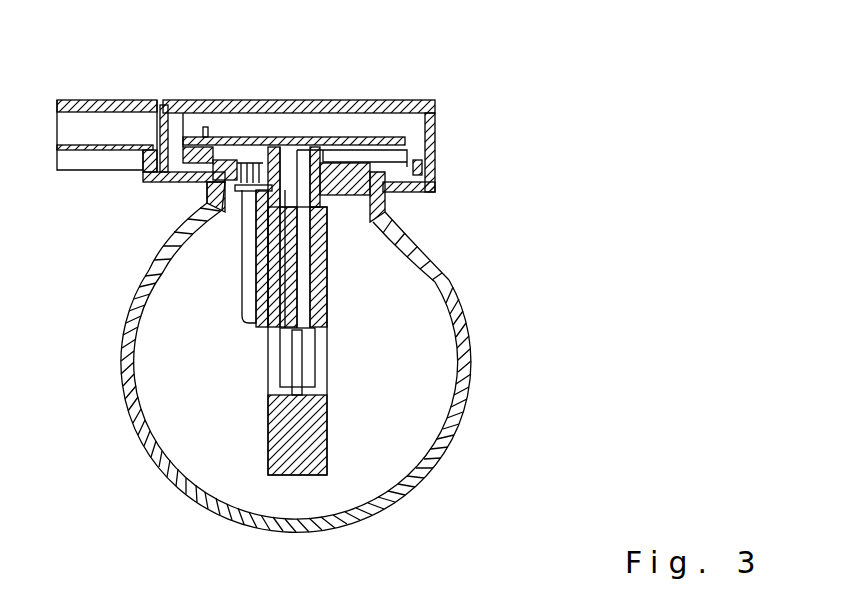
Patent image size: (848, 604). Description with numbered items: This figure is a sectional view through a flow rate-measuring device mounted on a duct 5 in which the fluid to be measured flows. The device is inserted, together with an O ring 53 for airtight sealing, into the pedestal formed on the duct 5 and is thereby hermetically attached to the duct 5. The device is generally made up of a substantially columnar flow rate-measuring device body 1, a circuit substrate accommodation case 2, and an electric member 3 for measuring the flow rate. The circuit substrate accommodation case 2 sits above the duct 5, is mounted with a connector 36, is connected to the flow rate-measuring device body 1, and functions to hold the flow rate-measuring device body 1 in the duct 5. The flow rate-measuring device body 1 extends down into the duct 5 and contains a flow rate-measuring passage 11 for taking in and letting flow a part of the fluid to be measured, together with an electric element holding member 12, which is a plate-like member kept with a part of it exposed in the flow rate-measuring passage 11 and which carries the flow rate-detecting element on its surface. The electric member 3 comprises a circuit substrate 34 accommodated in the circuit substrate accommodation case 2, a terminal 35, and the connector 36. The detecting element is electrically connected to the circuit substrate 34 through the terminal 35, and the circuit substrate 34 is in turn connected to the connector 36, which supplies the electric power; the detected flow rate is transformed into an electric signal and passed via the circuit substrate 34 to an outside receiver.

The flow rate-measuring device body 1 is at (317, 435).
The circuit substrate accommodation case 2 is at (230, 100).
The electric member 3 is at (294, 100).
The duct 5 is at (375, 493).
The flow rate-measuring passage 11 is at (310, 348).
The electric element holding member 12 is at (295, 381).
The circuit substrate 34 is at (358, 100).
The terminal 35 is at (297, 240).
The connector 36 is at (87, 160).
The O ring 53 is at (215, 192).